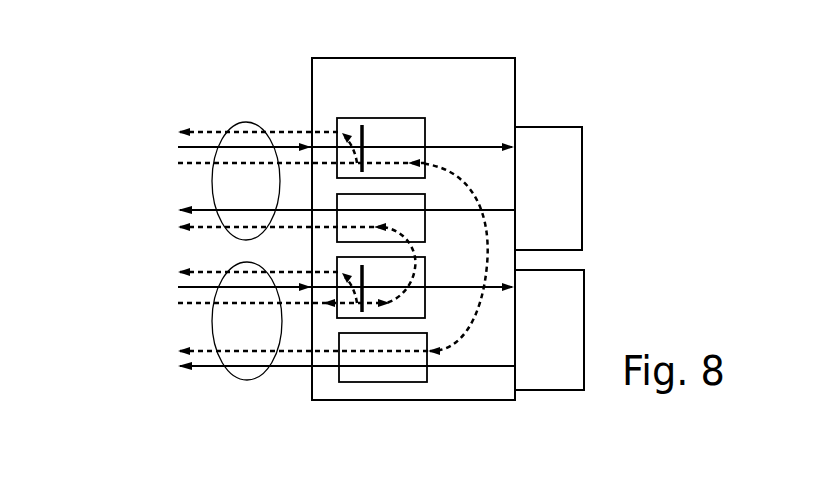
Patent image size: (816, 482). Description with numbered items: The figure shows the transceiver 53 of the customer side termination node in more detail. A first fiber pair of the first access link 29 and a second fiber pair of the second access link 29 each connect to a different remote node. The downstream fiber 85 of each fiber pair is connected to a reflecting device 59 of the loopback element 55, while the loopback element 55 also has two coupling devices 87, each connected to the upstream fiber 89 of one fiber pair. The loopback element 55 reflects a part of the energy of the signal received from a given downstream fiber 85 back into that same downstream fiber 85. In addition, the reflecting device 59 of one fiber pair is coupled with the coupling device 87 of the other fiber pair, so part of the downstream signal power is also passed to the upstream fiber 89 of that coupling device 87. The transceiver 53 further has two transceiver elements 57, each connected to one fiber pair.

The transceiver 53 is at (562, 78).
The loopback element 55 is at (478, 68).
The transceiver element 57 is at (568, 236).
The reflecting device 59 is at (425, 133).
The coupling device 87 is at (425, 222).
The downstream fiber 85 is at (146, 148).
The upstream fiber 89 is at (146, 219).
The access link 29 is at (237, 122).